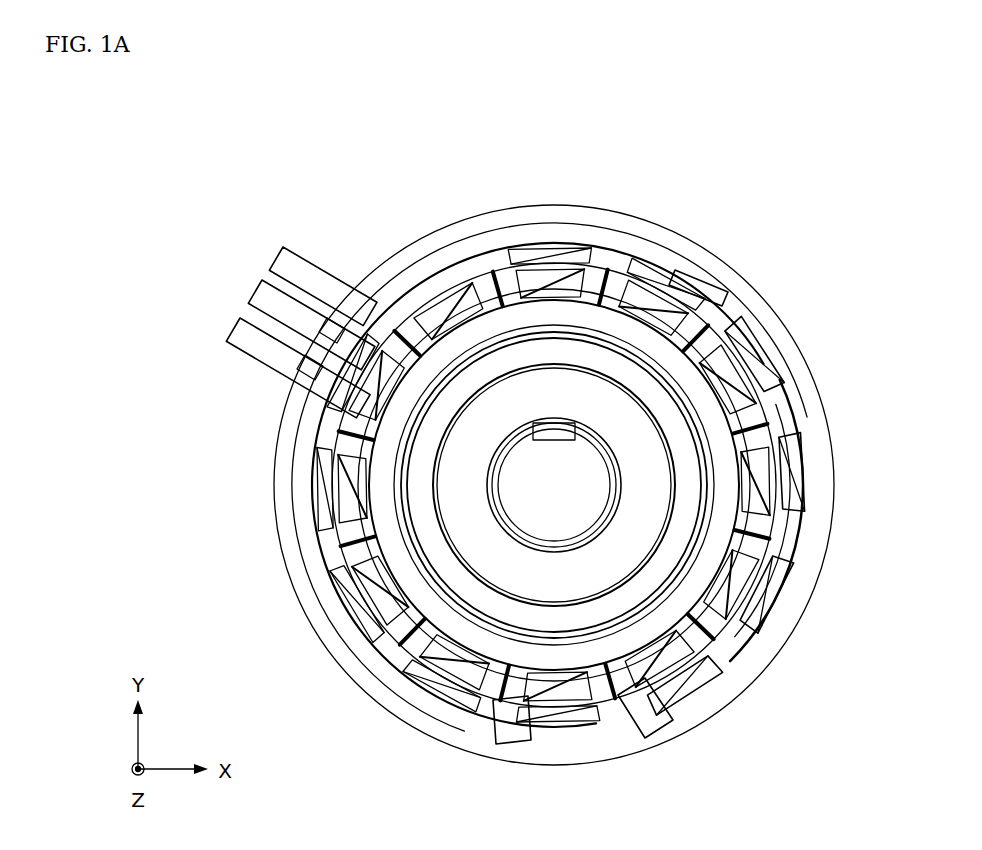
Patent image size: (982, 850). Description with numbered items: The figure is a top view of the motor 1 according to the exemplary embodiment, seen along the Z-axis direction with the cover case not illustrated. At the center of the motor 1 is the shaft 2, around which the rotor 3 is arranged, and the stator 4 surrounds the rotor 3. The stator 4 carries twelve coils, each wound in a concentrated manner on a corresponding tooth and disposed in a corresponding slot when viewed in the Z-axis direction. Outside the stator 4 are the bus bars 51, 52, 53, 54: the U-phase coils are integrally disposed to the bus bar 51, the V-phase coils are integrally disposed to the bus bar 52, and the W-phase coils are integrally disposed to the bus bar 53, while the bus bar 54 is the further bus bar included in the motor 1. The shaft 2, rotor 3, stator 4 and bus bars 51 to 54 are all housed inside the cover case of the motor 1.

The motor 1 is at (347, 185).
The shaft 2 is at (520, 462).
The rotor 3 is at (597, 393).
The stator 4 is at (822, 437).
The bus bar 51 is at (550, 693).
The bus bar 52 is at (740, 345).
The bus bar 53 is at (690, 270).
The bus bar 54 is at (652, 620).